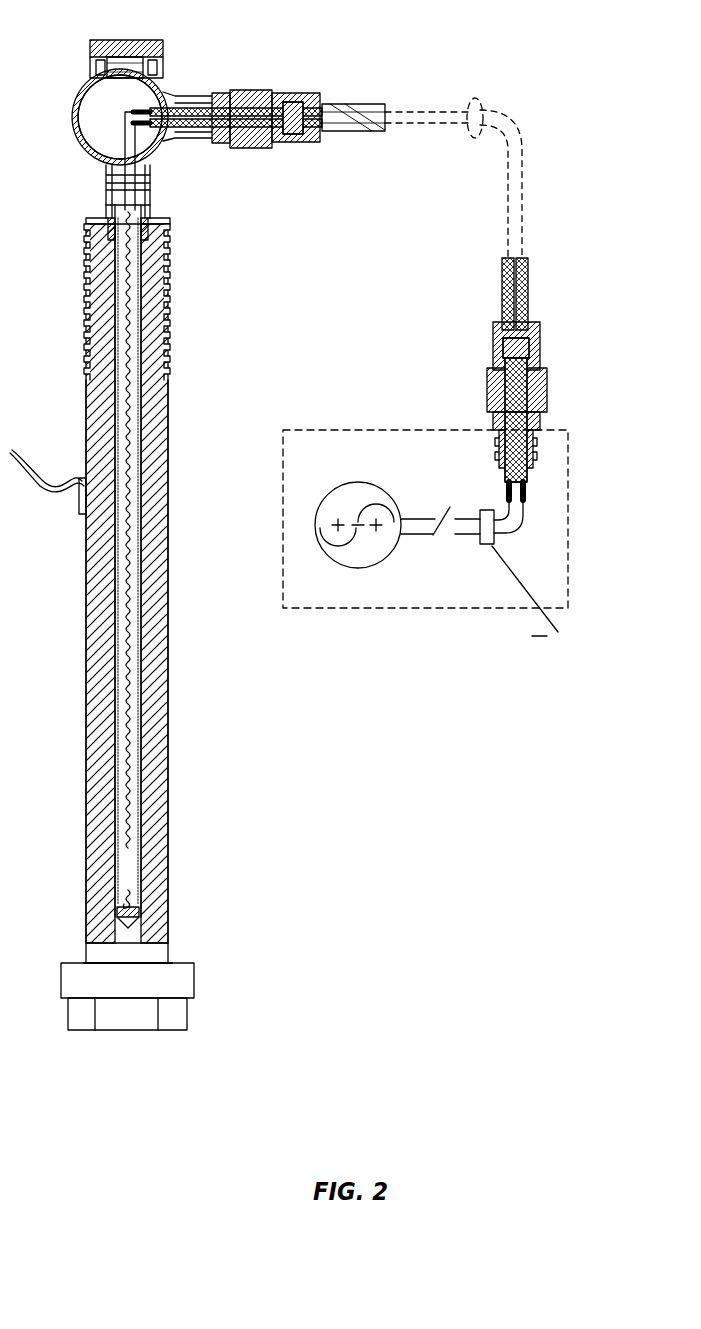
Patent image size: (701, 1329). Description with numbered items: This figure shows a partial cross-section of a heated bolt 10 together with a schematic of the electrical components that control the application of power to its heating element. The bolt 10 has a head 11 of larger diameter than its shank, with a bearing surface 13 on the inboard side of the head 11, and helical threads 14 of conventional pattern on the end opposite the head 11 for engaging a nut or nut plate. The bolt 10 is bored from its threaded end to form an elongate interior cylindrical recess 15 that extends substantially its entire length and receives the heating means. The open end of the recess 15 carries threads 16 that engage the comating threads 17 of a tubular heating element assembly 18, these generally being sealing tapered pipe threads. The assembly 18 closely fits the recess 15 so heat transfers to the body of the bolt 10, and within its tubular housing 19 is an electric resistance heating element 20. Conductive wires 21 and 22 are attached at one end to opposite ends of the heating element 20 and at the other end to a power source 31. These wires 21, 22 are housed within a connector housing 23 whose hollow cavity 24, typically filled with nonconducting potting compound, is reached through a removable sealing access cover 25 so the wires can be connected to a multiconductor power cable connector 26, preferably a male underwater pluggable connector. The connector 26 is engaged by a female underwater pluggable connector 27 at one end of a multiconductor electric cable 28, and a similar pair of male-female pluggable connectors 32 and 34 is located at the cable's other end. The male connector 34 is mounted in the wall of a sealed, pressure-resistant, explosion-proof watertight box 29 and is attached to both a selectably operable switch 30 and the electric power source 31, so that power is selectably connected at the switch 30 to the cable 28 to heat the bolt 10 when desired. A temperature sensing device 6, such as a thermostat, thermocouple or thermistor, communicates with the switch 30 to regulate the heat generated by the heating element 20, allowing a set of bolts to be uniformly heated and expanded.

The temperature sensing device 6 is at (80, 486).
The bolt 10 is at (218, 705).
The head 11 is at (194, 982).
The bearing surface 13 is at (180, 963).
The helical threads 14 is at (165, 316).
The interior cylindrical recess 15 is at (148, 915).
The threads 16 is at (146, 215).
The comating threads 17 is at (144, 234).
The tubular heating element assembly 18 is at (141, 745).
The tubular housing 19 is at (130, 872).
The electric resistance heating element 20 is at (131, 788).
The conductive wire 21 is at (133, 140).
The conductive wire 22 is at (122, 141).
The connector housing 23 is at (75, 88).
The hollow cavity 24 is at (98, 122).
The removable sealing access cover 25 is at (112, 41).
The multiconductor power cable connector 26 is at (220, 98).
The female underwater pluggable connector 27 is at (290, 95).
The multiconductor electric cable 28 is at (478, 97).
The watertight box 29 is at (386, 430).
The selectably operable switch 30 is at (433, 535).
The power source 31 is at (362, 567).
The pluggable connector 32 is at (494, 358).
The male connector 34 is at (493, 428).